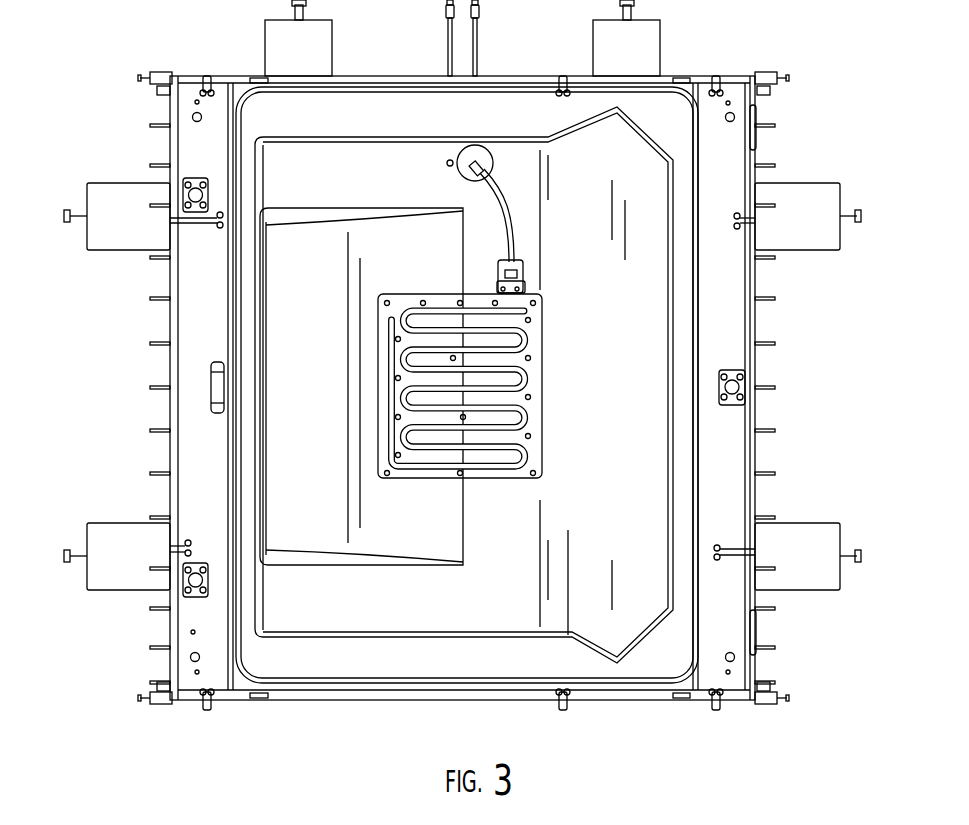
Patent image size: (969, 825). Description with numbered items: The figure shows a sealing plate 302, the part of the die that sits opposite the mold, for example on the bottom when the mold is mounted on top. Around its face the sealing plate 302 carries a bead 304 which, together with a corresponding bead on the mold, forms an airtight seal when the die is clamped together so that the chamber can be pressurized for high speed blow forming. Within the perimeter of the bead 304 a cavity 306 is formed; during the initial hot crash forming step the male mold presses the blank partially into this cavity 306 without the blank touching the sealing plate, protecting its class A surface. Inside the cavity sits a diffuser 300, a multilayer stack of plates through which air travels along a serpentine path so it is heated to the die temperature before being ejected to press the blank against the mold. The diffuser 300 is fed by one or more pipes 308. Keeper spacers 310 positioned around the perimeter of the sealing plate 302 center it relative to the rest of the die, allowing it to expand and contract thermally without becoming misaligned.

The diffuser 300 is at (413, 293).
The sealing plate 302 is at (352, 74).
The bead 304 is at (700, 183).
The cavity 306 is at (517, 567).
The pipes 308 is at (478, 38).
The keeper spacers 310 is at (820, 184).